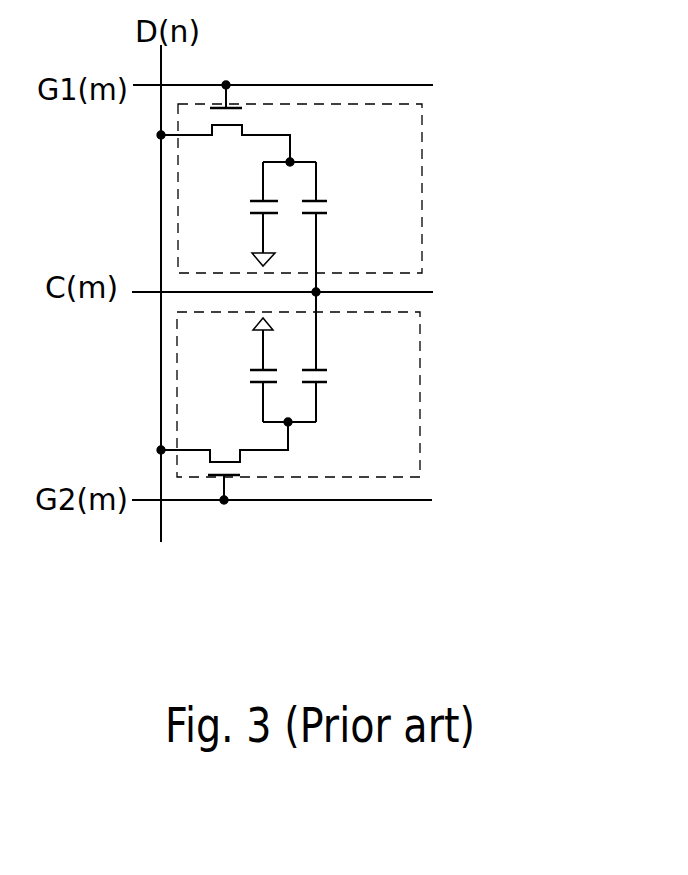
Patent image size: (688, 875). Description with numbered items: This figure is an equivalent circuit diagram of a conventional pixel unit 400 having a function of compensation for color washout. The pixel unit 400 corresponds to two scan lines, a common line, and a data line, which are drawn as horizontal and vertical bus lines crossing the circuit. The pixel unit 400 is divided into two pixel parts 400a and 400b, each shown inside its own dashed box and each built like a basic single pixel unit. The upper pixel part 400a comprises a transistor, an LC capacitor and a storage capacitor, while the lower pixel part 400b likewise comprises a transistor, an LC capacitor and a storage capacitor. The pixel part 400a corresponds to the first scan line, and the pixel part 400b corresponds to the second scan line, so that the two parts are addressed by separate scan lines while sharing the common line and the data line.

The pixel unit 400 is at (386, 292).
The pixel part 400a is at (492, 198).
The pixel part 400b is at (339, 398).